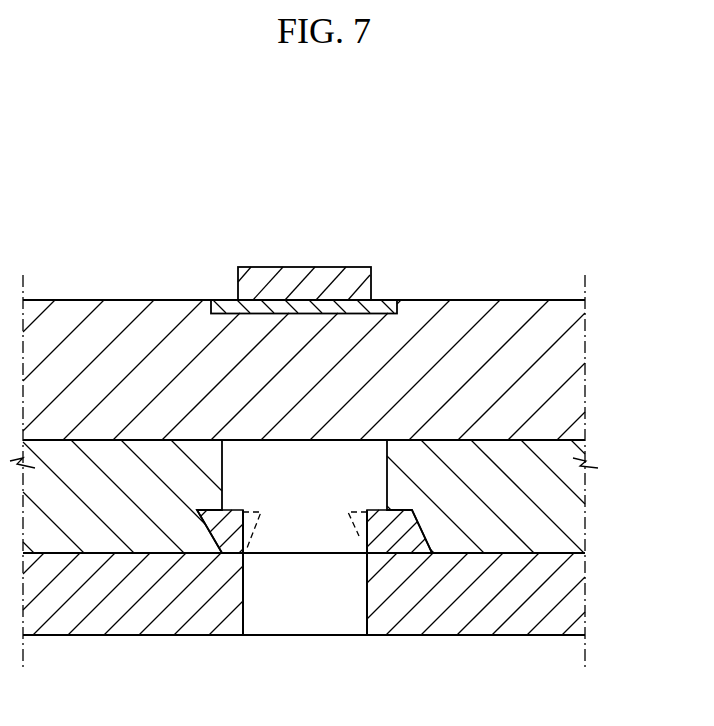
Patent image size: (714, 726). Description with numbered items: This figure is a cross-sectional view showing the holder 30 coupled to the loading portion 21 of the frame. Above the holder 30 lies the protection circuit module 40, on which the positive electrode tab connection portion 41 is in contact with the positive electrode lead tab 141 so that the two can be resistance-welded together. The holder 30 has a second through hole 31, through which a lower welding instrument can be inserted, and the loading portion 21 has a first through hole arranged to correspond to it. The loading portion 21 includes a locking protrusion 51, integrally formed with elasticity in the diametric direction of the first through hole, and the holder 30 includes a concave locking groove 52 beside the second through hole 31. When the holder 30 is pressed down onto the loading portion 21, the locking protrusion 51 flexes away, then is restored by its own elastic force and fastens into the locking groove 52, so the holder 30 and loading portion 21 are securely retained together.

The protection circuit module 40 is at (575, 358).
The positive electrode tab connection portion 41 is at (382, 300).
The positive electrode lead tab 141 is at (250, 270).
The holder 30 is at (577, 482).
The loading portion 21 is at (577, 600).
The second through hole 31 is at (288, 517).
The locking protrusion 51 is at (356, 535).
The locking groove 52 is at (398, 538).